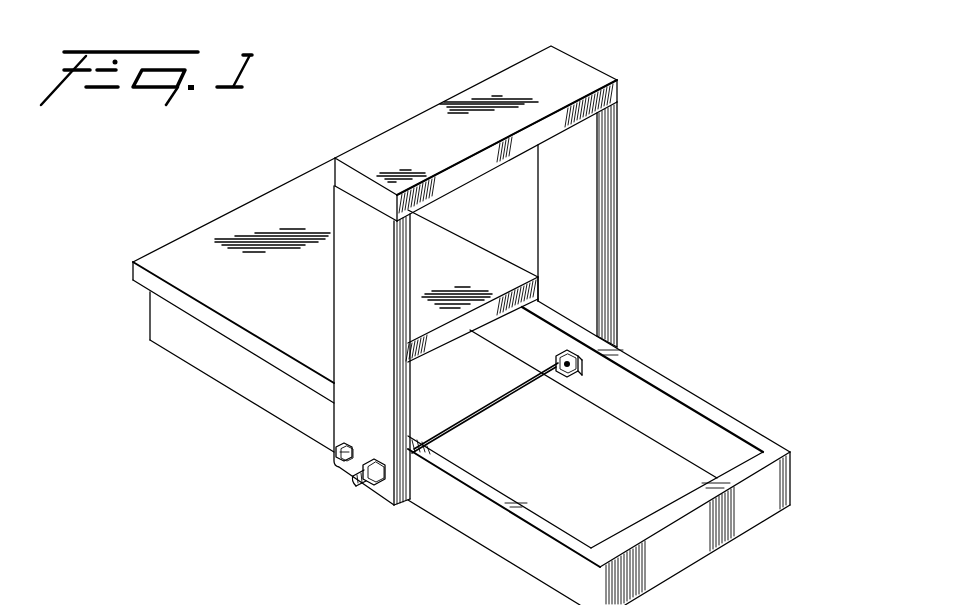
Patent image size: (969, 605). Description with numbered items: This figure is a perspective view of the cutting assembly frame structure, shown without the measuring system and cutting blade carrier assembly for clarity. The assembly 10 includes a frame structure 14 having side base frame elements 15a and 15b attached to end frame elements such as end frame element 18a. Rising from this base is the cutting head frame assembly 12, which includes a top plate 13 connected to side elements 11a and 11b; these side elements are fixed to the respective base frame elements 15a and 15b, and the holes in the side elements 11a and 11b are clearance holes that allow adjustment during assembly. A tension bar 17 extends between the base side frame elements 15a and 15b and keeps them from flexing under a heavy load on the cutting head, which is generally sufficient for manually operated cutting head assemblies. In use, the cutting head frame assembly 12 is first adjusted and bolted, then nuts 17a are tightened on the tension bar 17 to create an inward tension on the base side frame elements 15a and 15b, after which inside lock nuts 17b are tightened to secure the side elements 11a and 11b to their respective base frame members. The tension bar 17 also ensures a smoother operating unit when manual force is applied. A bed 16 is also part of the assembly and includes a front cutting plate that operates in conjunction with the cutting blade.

The assembly 10 is at (695, 237).
The side element 11a is at (345, 362).
The side element 11b is at (604, 186).
The cutting head frame assembly 12 is at (440, 94).
The top plate 13 is at (571, 75).
The frame structure 14 is at (712, 571).
The side base frame element 15a is at (168, 339).
The side base frame element 15b is at (703, 400).
The bed 16 is at (183, 246).
The tension bar 17 is at (481, 413).
The nut 17a is at (374, 487).
The inside lock nut 17b is at (572, 388).
The end frame element 18a is at (650, 525).